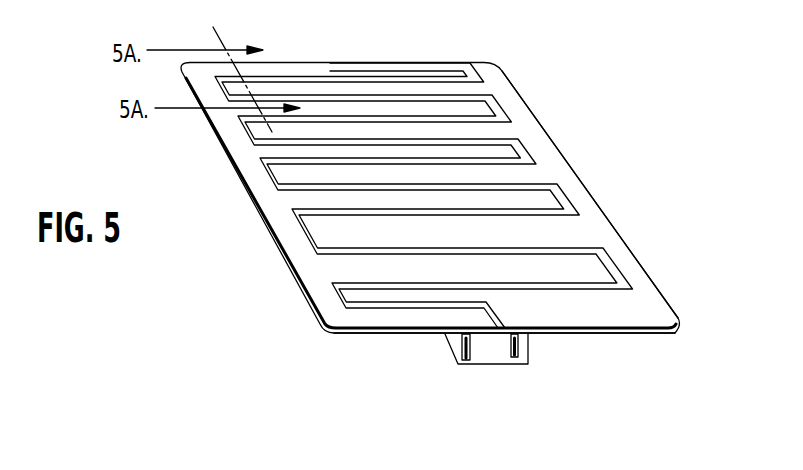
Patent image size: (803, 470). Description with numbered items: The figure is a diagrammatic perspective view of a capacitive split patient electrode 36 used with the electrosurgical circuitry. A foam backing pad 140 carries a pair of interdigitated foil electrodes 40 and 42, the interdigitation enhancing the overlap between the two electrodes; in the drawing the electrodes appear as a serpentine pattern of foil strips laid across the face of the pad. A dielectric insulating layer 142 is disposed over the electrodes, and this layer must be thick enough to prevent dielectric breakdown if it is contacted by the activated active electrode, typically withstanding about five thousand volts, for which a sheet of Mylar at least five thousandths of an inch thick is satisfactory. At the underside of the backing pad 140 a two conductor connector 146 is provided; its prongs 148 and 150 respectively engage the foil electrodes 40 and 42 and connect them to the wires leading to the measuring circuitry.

The split electrode 36 is at (413, 29).
The foil electrode 40 is at (243, 162).
The foil electrode 42 is at (530, 125).
The foam backing pad 140 is at (372, 334).
The dielectric insulating layer 142 is at (598, 207).
The two conductor connector 146 is at (487, 359).
The prong 148 is at (461, 348).
The prong 150 is at (519, 350).